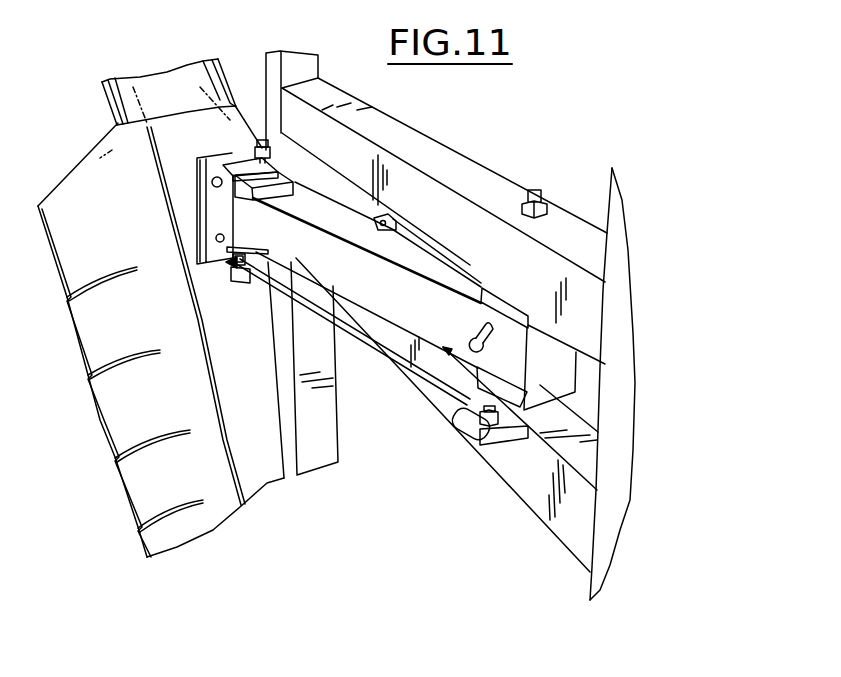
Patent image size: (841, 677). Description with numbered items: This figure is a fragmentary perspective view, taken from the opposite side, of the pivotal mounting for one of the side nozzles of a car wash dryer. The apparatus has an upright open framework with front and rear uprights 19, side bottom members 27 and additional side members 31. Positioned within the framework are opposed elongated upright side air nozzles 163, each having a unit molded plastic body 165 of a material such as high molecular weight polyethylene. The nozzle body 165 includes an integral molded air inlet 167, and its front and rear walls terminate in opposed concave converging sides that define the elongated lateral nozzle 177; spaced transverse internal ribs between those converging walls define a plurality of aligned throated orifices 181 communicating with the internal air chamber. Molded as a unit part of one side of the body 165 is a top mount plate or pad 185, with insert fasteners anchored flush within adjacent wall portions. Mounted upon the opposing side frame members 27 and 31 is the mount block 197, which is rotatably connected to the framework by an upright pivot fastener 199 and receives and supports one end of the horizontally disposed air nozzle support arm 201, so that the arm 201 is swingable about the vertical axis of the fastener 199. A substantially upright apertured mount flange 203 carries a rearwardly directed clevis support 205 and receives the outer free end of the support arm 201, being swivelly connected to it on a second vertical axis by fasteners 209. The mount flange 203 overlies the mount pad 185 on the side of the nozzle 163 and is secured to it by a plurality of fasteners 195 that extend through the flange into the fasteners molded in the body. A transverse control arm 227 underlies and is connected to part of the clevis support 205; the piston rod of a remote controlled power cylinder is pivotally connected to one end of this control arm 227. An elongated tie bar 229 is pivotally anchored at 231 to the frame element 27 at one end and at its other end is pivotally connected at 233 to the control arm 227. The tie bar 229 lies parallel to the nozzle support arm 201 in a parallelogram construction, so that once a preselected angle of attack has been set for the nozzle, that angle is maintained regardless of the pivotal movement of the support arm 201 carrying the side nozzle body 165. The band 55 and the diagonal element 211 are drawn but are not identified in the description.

The front and rear uprights 19 is at (295, 63).
The side bottom members 27 is at (538, 498).
The additional side members 31 is at (472, 175).
The upper band 55 is at (158, 82).
The upright side air nozzles 163 is at (265, 473).
The unit molded plastic body 165 is at (240, 510).
The air inlet 167 is at (126, 138).
The elongated lateral nozzle 177 is at (128, 408).
The throated orifices 181 is at (80, 347).
The top mount plate or pad 185 is at (199, 188).
The fasteners 195 is at (216, 239).
The mount block 197 is at (563, 392).
The upright pivot fastener 199 is at (538, 190).
The air nozzle support arm 201 is at (458, 285).
The apertured mount flange 203 is at (217, 213).
The clevis support 205 is at (240, 162).
The fasteners 209 is at (261, 140).
The brace 211 is at (407, 234).
The transverse control arm 227 is at (235, 284).
The elongated tie bar 229 is at (397, 360).
The pivotal anchor 231 is at (480, 427).
The pivotal connection 233 is at (232, 268).